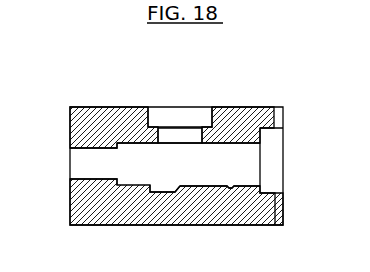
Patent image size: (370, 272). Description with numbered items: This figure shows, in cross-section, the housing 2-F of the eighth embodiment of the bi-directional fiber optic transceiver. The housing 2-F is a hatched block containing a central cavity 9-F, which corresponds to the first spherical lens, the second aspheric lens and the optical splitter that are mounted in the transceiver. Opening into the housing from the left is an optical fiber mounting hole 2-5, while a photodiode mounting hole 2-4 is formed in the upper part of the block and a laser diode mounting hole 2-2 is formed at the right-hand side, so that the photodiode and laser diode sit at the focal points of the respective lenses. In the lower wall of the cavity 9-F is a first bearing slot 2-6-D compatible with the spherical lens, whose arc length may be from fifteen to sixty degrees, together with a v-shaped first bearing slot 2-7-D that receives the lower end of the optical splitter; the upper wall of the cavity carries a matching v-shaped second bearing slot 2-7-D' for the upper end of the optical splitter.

The cavity 9-F is at (178, 162).
The photodiode mounting hole 2-4 is at (195, 118).
The second bearing slot 2-7-D' is at (241, 106).
The housing 2-F is at (77, 138).
The optical fiber mounting hole 2-5 is at (78, 168).
The laser diode mounting hole 2-2 is at (335, 158).
The first bearing slot 2-7-D is at (131, 221).
The first bearing slot 2-6-D is at (225, 188).